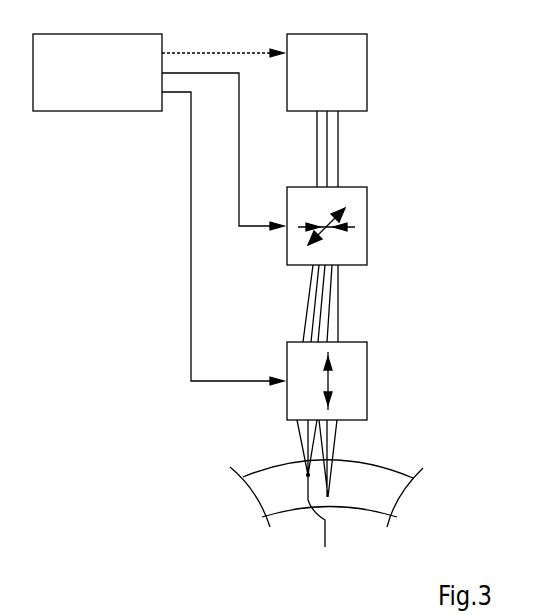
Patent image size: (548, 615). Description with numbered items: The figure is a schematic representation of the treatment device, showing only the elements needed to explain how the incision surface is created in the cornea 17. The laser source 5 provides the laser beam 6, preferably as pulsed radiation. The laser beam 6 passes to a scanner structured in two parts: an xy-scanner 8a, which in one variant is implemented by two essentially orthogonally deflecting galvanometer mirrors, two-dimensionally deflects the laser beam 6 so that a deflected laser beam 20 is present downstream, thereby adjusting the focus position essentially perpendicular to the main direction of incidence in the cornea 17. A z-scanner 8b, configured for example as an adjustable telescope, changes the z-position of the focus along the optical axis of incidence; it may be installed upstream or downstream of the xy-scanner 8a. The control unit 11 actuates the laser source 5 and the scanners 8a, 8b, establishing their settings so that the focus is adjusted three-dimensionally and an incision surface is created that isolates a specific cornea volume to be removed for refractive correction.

The control unit 11 is at (108, 112).
The laser source 5 is at (367, 68).
The laser beam 6 is at (338, 143).
The xy-scanner 8a is at (367, 233).
The deflected laser beam 20 is at (328, 303).
The z-scanner 8b is at (367, 390).
The cornea 17 is at (397, 477).